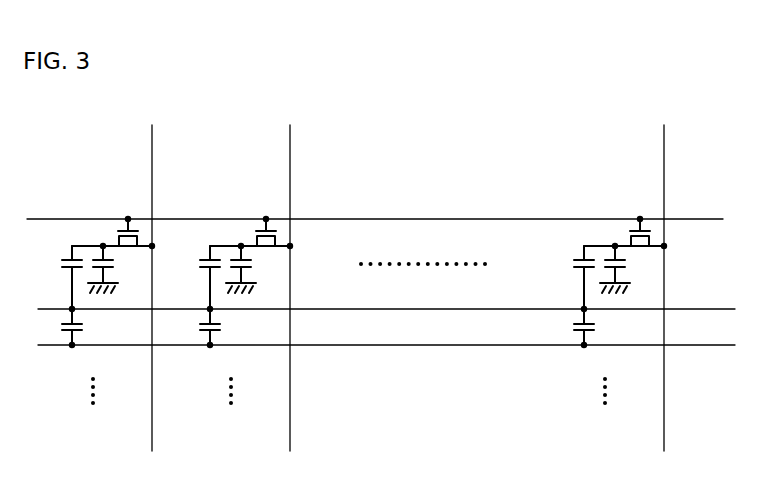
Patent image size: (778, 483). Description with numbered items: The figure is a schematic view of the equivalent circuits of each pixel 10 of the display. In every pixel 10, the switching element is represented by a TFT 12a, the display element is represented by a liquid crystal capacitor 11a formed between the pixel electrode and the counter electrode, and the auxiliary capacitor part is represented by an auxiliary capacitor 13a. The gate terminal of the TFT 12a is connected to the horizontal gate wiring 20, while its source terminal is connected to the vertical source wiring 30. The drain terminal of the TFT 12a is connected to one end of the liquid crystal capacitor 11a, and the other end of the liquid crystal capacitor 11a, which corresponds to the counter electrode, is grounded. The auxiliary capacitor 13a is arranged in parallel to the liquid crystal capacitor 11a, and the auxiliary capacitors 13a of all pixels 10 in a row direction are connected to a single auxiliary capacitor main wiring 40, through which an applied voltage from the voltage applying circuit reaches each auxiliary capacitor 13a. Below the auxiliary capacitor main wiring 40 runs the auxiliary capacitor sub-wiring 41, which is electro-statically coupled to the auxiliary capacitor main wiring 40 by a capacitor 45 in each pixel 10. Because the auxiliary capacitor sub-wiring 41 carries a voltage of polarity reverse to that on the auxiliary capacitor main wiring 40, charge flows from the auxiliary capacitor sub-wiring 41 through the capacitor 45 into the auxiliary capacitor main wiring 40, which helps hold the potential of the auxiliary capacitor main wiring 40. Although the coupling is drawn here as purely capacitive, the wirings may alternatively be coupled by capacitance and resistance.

The pixel 10 is at (108, 297).
The liquid crystal capacitor 11a is at (98, 258).
The TFT 12a is at (136, 230).
The auxiliary capacitor 13a is at (65, 258).
The gate wiring 20 is at (695, 220).
The source wiring 30 is at (152, 137).
The auxiliary capacitor main wiring 40 is at (680, 310).
The auxiliary capacitor sub-wiring 41 is at (680, 346).
The capacitor 45 is at (58, 327).